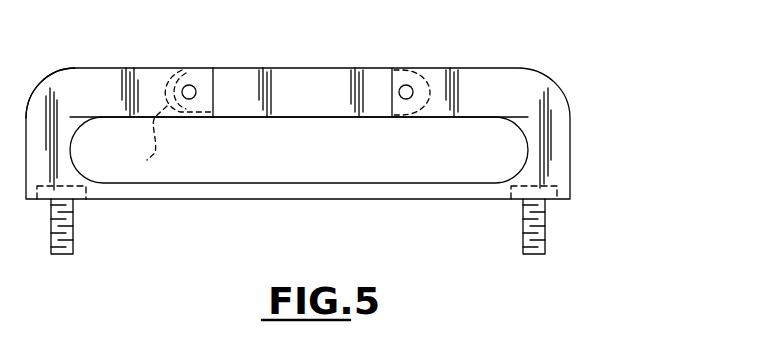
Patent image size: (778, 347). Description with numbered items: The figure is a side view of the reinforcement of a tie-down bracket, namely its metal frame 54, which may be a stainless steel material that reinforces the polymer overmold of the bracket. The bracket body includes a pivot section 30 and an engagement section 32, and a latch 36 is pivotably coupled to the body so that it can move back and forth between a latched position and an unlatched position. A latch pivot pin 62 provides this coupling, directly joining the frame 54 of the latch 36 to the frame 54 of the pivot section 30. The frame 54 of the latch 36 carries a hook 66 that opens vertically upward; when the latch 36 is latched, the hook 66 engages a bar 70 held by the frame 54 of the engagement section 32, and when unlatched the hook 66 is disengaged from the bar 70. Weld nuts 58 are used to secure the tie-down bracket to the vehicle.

The pivot section 30 is at (498, 68).
The engagement section 32 is at (98, 68).
The latch 36 is at (305, 68).
The frame 54 is at (597, 70).
The weld nuts 58 is at (73, 245).
The latch pivot pin 62 is at (406, 99).
The hook 66 is at (141, 142).
The bar 70 is at (190, 85).